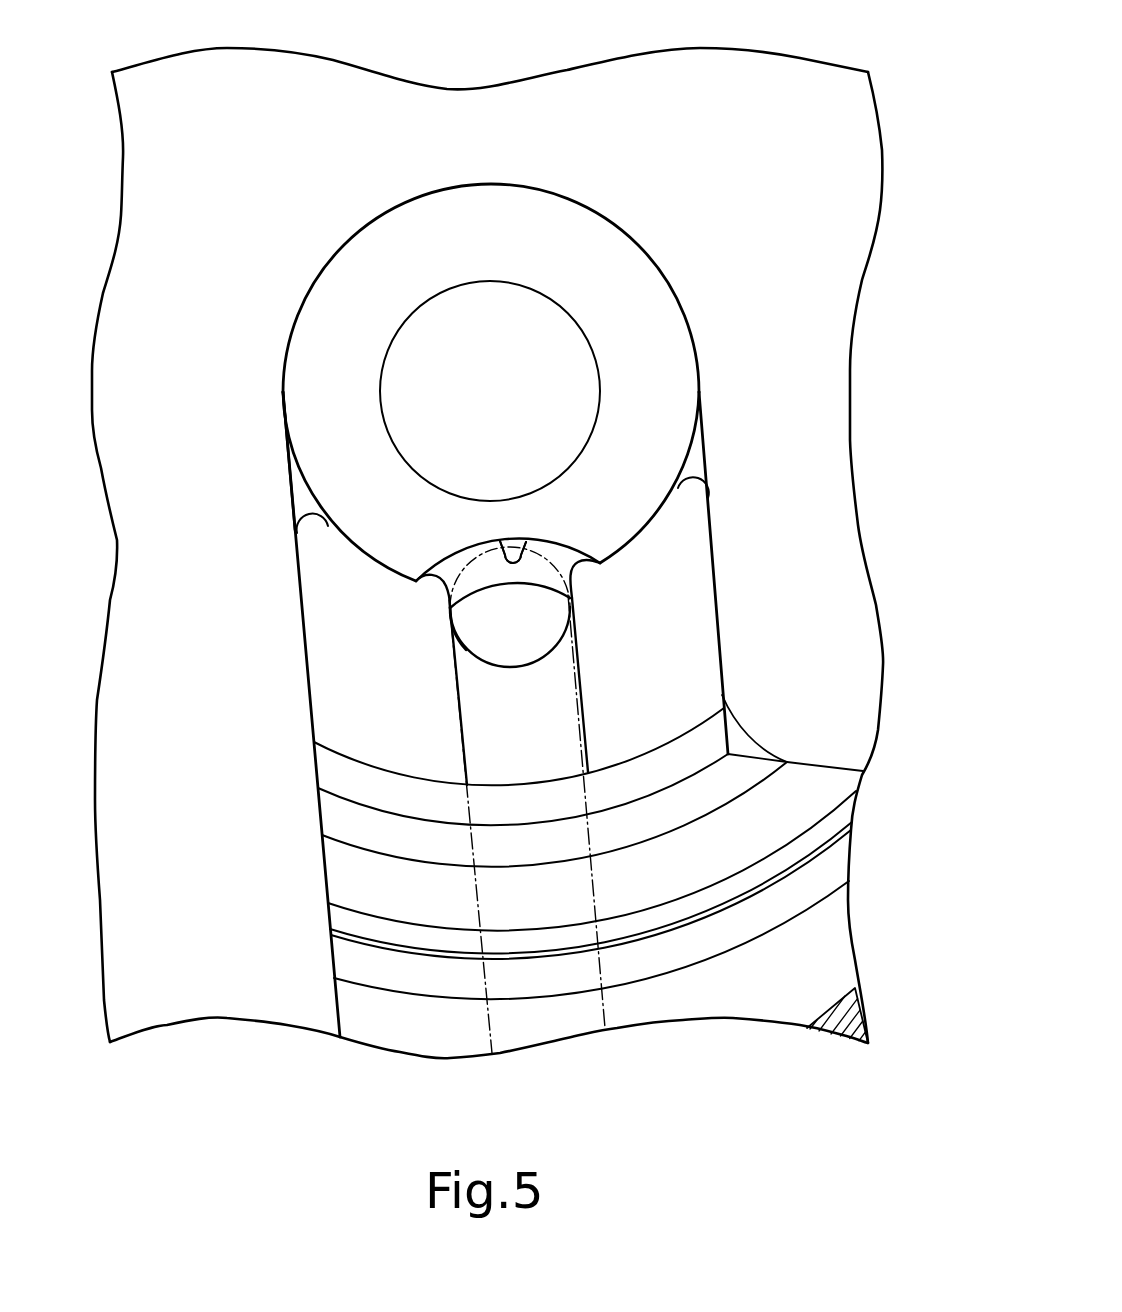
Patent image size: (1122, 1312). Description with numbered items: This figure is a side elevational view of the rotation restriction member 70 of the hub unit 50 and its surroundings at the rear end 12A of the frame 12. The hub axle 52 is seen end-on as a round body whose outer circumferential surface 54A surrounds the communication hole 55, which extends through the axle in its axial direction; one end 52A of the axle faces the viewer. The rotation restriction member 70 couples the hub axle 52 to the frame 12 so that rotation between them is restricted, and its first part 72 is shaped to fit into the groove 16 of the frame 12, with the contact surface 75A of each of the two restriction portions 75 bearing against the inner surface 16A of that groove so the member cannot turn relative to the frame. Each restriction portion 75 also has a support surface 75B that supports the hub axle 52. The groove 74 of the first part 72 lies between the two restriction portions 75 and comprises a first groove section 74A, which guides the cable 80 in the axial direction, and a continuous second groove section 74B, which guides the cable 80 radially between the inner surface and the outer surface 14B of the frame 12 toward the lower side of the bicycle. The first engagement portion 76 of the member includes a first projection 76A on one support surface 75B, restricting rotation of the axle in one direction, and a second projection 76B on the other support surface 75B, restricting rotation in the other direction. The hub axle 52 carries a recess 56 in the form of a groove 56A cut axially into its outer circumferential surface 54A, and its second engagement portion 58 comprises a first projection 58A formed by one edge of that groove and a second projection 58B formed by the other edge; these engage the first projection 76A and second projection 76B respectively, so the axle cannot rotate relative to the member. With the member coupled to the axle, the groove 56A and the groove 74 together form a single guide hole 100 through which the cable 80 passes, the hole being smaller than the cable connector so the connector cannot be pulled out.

The hub unit 50 is at (893, 60).
The frame 12 is at (496, 553).
The rear end 12A is at (154, 177).
The outer surface 14B is at (853, 463).
The groove 16 is at (300, 500).
The inner surface 16A is at (224, 461).
The rotation restriction member 70 is at (728, 485).
The hub axle 52 is at (511, 364).
The one end 52A is at (648, 246).
The outer circumferential surface 54A is at (511, 382).
The communication hole 55 is at (492, 292).
The first part 72 is at (504, 714).
The restriction portions 75 is at (504, 714).
The contact surface 75A is at (306, 640).
The support surface 75B is at (382, 562).
The first engagement portion 76 is at (499, 536).
The first projection 76A is at (586, 565).
The second projection 76B is at (440, 572).
The second engagement portion 58 is at (510, 628).
The first projection 58A is at (590, 566).
The second projection 58B is at (418, 588).
The groove 74 is at (584, 691).
The first groove section 74A is at (548, 648).
The second groove section 74B is at (536, 712).
The recess 56 is at (536, 491).
The groove 56A is at (512, 546).
The guide hole 100 is at (500, 545).
The cable 80 is at (605, 1002).